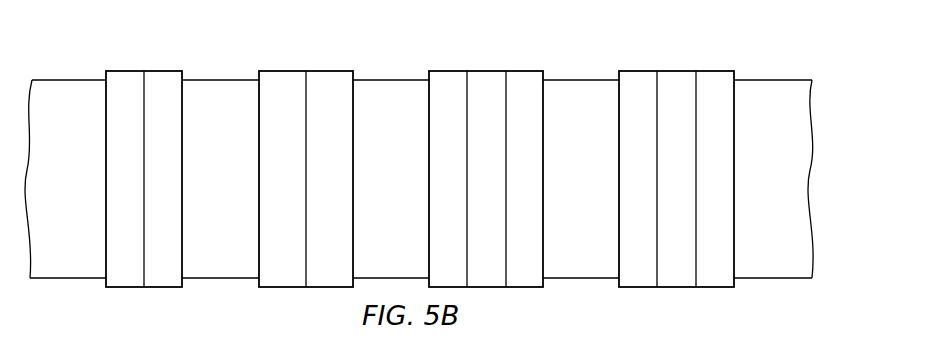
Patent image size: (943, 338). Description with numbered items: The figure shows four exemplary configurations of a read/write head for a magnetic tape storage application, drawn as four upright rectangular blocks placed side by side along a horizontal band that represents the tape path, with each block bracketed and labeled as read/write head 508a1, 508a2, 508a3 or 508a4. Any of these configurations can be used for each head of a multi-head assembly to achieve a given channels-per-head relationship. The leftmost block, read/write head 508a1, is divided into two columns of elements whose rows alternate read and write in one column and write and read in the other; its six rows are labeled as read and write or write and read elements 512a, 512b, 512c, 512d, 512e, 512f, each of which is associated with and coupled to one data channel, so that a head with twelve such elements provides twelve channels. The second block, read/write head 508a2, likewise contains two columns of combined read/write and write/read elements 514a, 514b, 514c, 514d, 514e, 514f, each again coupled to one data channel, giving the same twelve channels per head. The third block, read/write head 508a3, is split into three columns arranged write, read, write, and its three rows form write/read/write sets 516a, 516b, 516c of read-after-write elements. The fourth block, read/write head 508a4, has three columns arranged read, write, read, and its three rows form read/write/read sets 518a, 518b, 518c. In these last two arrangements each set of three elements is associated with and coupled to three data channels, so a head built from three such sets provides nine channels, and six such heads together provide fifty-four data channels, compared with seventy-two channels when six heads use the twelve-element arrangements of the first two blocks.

The read/write head configuration 508a1 is at (185, 63).
The read/write head 508a2 is at (358, 63).
The read/write head arrangement 508a3 is at (548, 63).
The read/write head arrangement 508a4 is at (738, 63).
The read and write or write and read element 512a is at (108, 108).
The read and write or write and read element 512b is at (108, 137).
The read and write or write and read element 512c is at (108, 165).
The read and write or write and read element 512d is at (108, 195).
The read and write or write and read element 512e is at (108, 223).
The read and write or write and read element 512f is at (108, 252).
The read and write or write and read element 514a is at (262, 137).
The read and write or write and read element 514b is at (350, 137).
The read and write or write and read element 514c is at (262, 179).
The read and write or write and read element 514d is at (350, 179).
The read and write or write and read element 514e is at (262, 223).
The read and write or write and read element 514f is at (350, 223).
The write/read/write set 516a is at (536, 137).
The write/read/write set 516b is at (536, 180).
The write/read/write set 516c is at (536, 223).
The read/write/read set 518a is at (727, 137).
The read/write/read set 518b is at (727, 180).
The read/write/read set 518c is at (727, 223).